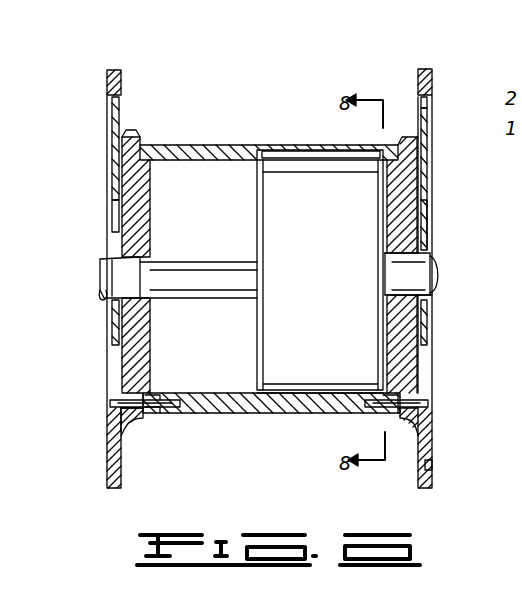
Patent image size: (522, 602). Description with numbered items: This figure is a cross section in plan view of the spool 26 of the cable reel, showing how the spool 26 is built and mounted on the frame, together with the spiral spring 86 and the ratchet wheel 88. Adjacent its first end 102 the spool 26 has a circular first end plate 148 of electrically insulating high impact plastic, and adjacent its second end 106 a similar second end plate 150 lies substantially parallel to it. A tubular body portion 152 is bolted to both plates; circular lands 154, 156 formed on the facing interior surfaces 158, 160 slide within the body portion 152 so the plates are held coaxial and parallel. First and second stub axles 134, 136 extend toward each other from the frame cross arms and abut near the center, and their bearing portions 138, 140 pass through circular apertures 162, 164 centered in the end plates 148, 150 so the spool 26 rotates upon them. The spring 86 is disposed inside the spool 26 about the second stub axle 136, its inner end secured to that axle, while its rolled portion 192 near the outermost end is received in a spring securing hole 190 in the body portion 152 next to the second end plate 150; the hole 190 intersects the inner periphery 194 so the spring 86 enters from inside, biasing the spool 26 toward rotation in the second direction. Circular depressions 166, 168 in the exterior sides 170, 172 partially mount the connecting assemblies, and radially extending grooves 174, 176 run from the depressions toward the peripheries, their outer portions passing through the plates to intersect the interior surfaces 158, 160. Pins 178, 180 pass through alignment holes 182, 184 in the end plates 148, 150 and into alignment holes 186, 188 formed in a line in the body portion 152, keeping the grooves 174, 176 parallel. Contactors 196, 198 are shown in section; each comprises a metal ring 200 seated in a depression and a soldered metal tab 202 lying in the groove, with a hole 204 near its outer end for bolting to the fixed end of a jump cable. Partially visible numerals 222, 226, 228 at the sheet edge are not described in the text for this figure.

The spool 26 is at (262, 78).
The spiral spring 86 is at (334, 257).
The ratchet wheel 88 is at (432, 466).
The first end 102 is at (110, 79).
The second end 106 is at (432, 146).
The first stub axle 134 is at (171, 262).
The second stub axle 136 is at (420, 268).
The bearing portion 138 is at (103, 262).
The bearing portion 140 is at (415, 276).
The first end plate 148 is at (133, 140).
The second end plate 150 is at (407, 135).
The tubular body portion 152 is at (215, 147).
The circular land 154 is at (158, 217).
The circular land 156 is at (398, 370).
The interior surface 158 is at (152, 332).
The interior surface 160 is at (388, 322).
The circular aperture 162 is at (102, 294).
The circular aperture 164 is at (440, 292).
The circular depression 166 is at (108, 340).
The circular depression 168 is at (437, 345).
The exterior side 170 is at (110, 376).
The exterior side 172 is at (435, 368).
The radially extending groove 174 is at (112, 112).
The radially extending groove 176 is at (430, 122).
The pin 178 is at (148, 420).
The pin 180 is at (425, 404).
The alignment hole 182 is at (112, 413).
The alignment hole 184 is at (435, 386).
The alignment hole 186 is at (165, 405).
The alignment hole 188 is at (400, 413).
The spring securing hole 190 is at (318, 152).
The rolled portion 192 is at (273, 150).
The inner periphery 194 is at (253, 191).
The contactor 196 is at (100, 207).
The contactor 198 is at (448, 201).
The metal ring 200 is at (437, 330).
The metal tab 202 is at (428, 180).
The hole 204 is at (425, 112).
The element 222 is at (509, 179).
The element 226 is at (510, 215).
The element 228 is at (521, 268).